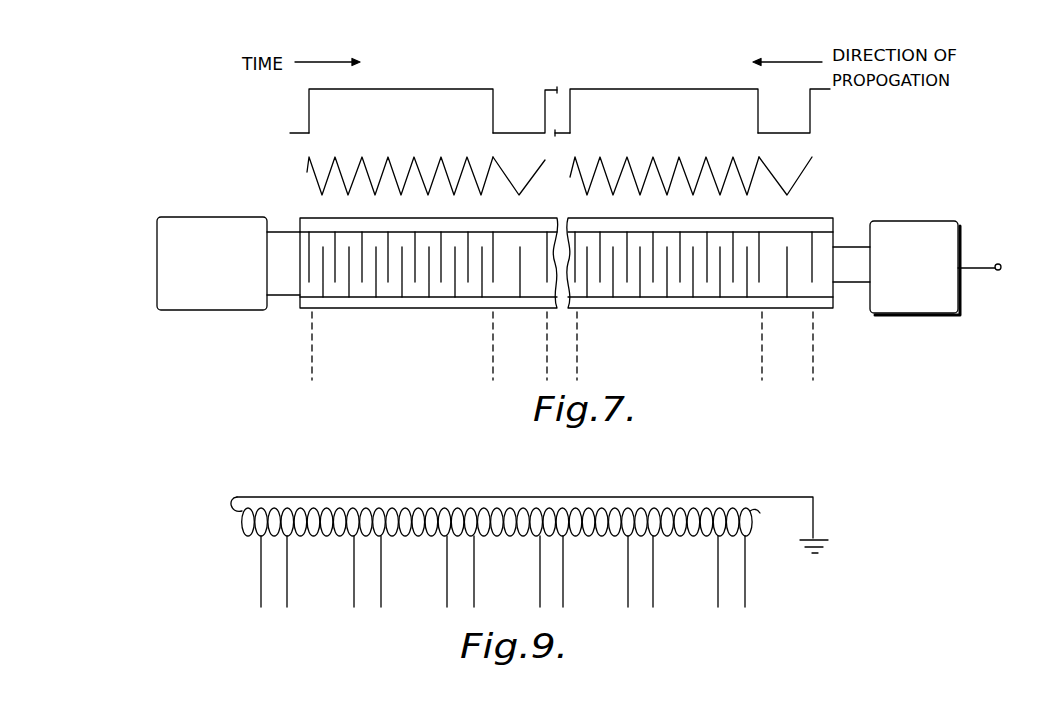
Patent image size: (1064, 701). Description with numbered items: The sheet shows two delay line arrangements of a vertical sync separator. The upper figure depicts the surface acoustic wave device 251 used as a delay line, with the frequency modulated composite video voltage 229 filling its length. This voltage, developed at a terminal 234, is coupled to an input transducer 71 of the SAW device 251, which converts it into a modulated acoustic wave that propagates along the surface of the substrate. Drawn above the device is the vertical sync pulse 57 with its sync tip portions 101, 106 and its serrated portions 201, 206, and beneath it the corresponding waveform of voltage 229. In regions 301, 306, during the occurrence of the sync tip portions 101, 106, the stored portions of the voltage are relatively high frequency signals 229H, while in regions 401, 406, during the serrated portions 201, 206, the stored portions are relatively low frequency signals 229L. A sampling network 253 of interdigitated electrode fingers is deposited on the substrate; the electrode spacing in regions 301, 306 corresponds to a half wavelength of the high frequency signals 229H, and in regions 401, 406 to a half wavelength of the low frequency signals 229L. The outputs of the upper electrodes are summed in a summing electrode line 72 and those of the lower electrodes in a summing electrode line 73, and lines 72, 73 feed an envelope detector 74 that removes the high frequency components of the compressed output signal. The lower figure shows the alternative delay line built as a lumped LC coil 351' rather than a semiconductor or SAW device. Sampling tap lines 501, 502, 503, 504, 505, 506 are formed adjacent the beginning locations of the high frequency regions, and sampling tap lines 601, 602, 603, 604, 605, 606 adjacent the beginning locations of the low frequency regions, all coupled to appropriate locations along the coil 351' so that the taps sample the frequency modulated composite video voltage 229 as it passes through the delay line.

In FIG. 7, the vertical sync pulse 57 is at (284, 120).
In FIG. 7, the sync tip portion 101 is at (401, 111).
In FIG. 7, the serrated portion 201 is at (525, 111).
In FIG. 7, the sync tip portion 106 is at (664, 111).
In FIG. 7, the serrated portion 206 is at (794, 111).
In FIG. 7, the frequency modulated composite video voltage 229 is at (617, 161).
In FIG. 7, the high frequency signals 229H is at (395, 168).
In FIG. 7, the low frequency signals 229L is at (505, 177).
In FIG. 7, the envelope detector 74 is at (208, 217).
In FIG. 7, the summing electrode line 72 is at (285, 230).
In FIG. 7, the summing electrode line 73 is at (288, 297).
In FIG. 7, the sampling network 253 is at (287, 271).
In FIG. 7, the surface acoustic wave device 251 is at (834, 305).
In FIG. 7, the region 301 is at (401, 306).
In FIG. 7, the region 401 is at (526, 306).
In FIG. 7, the region 306 is at (668, 306).
In FIG. 7, the region 406 is at (786, 306).
In FIG. 7, the input transducer 71 is at (910, 315).
In FIG. 7, the terminal 234 is at (1000, 270).
In FIG. 9, the lumped LC coil 351' is at (468, 517).
In FIG. 9, the sampling tap line 501 is at (261, 596).
In FIG. 9, the sampling tap line 502 is at (354, 596).
In FIG. 9, the sampling tap line 503 is at (447, 596).
In FIG. 9, the sampling tap line 504 is at (540, 596).
In FIG. 9, the sampling tap line 505 is at (628, 596).
In FIG. 9, the sampling tap line 506 is at (718, 596).
In FIG. 9, the sampling tap line 601 is at (287, 564).
In FIG. 9, the sampling tap line 602 is at (381, 564).
In FIG. 9, the sampling tap line 603 is at (474, 564).
In FIG. 9, the sampling tap line 604 is at (563, 564).
In FIG. 9, the sampling tap line 605 is at (653, 564).
In FIG. 9, the sampling tap line 606 is at (745, 564).